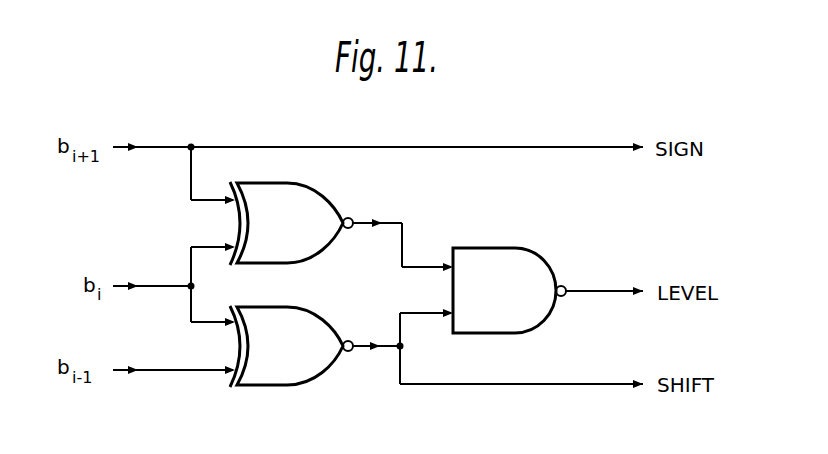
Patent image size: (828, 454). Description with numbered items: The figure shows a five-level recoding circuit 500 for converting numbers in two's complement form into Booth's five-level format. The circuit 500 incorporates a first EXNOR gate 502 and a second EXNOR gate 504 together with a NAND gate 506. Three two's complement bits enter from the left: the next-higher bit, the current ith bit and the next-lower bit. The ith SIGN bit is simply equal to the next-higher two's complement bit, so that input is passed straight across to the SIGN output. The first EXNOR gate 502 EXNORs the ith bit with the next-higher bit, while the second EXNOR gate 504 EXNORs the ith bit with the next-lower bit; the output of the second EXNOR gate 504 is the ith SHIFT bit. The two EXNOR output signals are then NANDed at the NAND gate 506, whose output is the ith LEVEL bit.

The five-level recoding circuit 500 is at (524, 128).
The first EXNOR gate 502 is at (313, 208).
The second EXNOR gate 504 is at (295, 365).
The NAND gate 506 is at (525, 272).